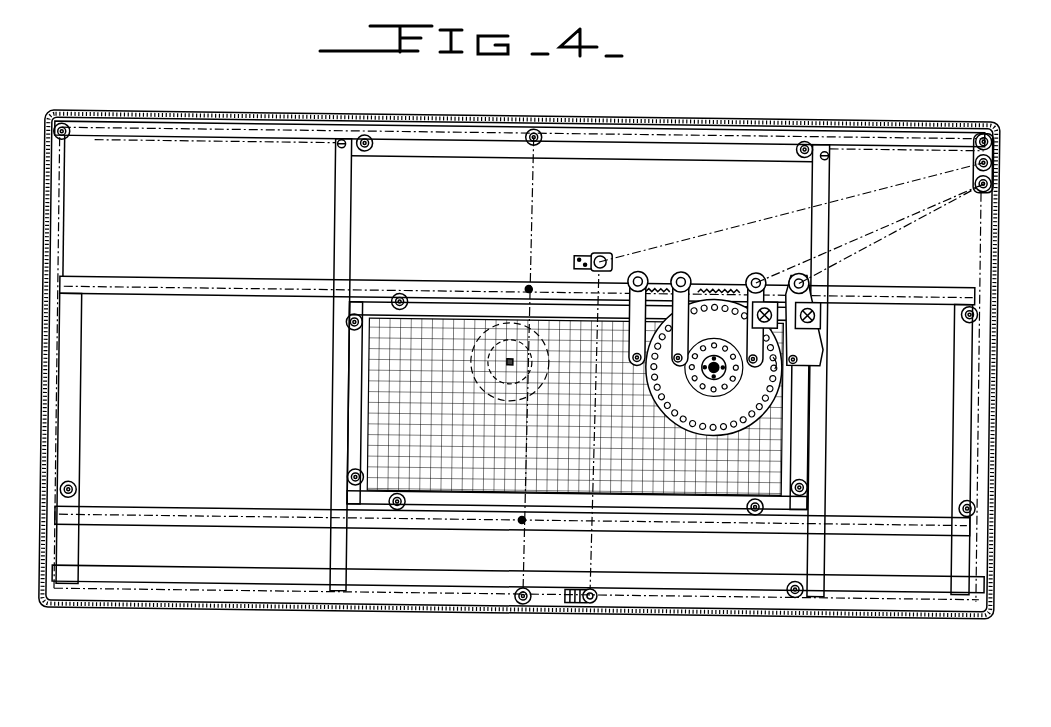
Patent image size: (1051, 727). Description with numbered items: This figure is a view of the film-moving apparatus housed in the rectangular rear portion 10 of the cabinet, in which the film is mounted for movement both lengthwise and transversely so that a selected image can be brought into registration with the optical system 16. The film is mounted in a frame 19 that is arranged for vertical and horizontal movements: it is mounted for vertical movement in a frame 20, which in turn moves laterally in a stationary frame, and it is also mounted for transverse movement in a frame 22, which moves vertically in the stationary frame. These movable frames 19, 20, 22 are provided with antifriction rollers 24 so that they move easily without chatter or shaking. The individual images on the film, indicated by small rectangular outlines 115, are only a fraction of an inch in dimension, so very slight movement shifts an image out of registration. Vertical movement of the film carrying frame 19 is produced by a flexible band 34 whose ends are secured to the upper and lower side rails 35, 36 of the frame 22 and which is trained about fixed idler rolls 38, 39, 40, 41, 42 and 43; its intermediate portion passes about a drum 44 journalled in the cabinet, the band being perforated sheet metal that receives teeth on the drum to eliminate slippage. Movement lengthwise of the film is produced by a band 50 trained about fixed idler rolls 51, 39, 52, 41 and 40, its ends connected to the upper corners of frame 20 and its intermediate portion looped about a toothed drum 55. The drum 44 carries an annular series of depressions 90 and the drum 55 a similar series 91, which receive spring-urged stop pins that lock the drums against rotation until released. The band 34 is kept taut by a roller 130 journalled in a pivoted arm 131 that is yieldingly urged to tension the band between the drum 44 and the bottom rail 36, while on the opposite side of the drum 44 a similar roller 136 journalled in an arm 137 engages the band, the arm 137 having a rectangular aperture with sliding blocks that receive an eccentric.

The rear portion 10 is at (521, 119).
The optical system 16 is at (500, 394).
The frame 19 is at (355, 394).
The frame 20 is at (352, 236).
The frame 22 is at (163, 290).
The antifriction rollers 24 is at (347, 321).
The flexible band 34 is at (799, 265).
The upper side rail 35 is at (441, 276).
The lower side rail 36 is at (173, 505).
The idler roll 38 is at (540, 134).
The idler roll 39 is at (993, 131).
The idler roll 40 is at (992, 173).
The idler roll 41 is at (598, 247).
The idler roll 42 is at (591, 600).
The idler roll 43 is at (526, 600).
The drum 44 is at (726, 382).
The band 50 is at (214, 122).
The idler roll 51 is at (66, 120).
The idler roll 52 is at (975, 151).
The drum 55 is at (782, 396).
The depressions 90 is at (720, 333).
The depressions 91 is at (669, 410).
The images 115 is at (780, 446).
The roller 130 is at (692, 269).
The arm 131 is at (680, 328).
The roller 136 is at (756, 265).
The arm 137 is at (778, 357).